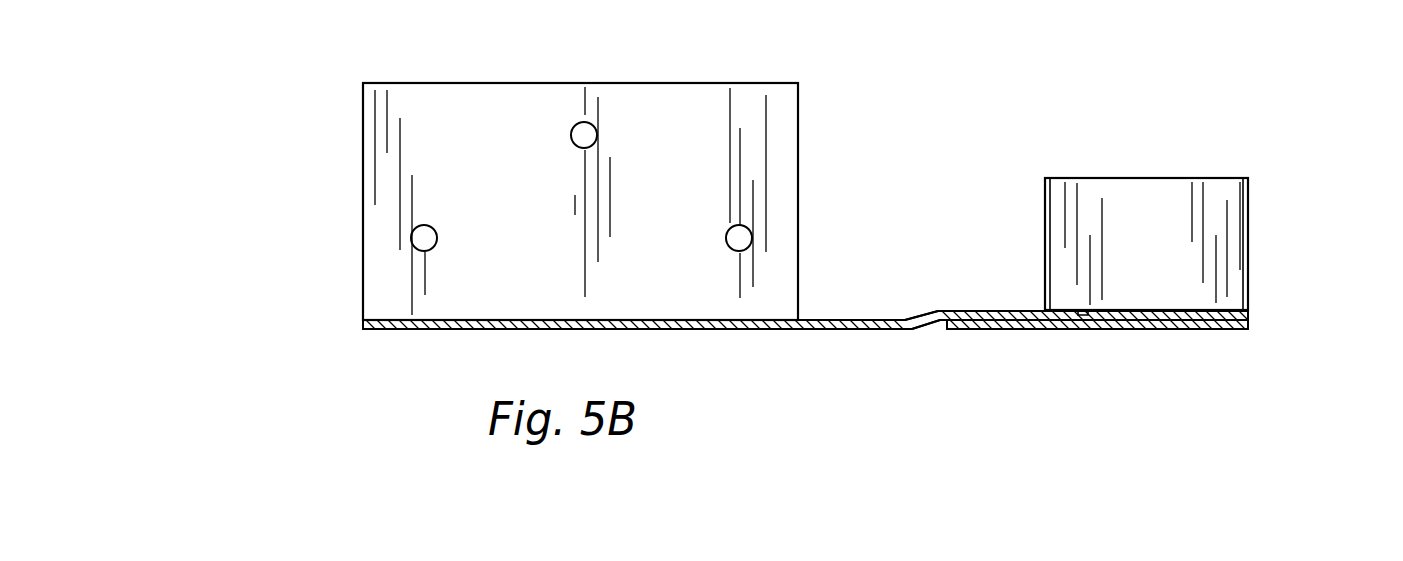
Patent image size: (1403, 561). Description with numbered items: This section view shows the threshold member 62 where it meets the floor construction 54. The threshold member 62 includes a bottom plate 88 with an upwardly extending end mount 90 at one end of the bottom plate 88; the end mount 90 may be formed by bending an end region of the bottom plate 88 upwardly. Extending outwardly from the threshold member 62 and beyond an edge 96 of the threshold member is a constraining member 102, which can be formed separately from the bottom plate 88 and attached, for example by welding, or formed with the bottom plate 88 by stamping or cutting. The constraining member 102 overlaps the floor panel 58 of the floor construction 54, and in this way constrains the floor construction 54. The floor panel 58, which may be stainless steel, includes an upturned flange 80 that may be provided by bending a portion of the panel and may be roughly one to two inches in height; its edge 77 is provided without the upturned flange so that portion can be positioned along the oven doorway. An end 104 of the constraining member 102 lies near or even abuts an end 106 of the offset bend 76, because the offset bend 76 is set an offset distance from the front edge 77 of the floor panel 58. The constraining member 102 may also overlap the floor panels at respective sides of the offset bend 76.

The floor construction 54 is at (1286, 146).
The floor panel 58 is at (1063, 330).
The threshold member 62 is at (336, 120).
The offset bend 76 is at (1173, 310).
The edge 77 is at (947, 329).
The upturned flange 80 is at (1145, 185).
The bottom plate 88 is at (646, 329).
The end mount 90 is at (528, 133).
The edge 96 is at (935, 329).
The constraining member 102 is at (996, 311).
The end 104 is at (1082, 311).
The end 106 is at (1108, 311).